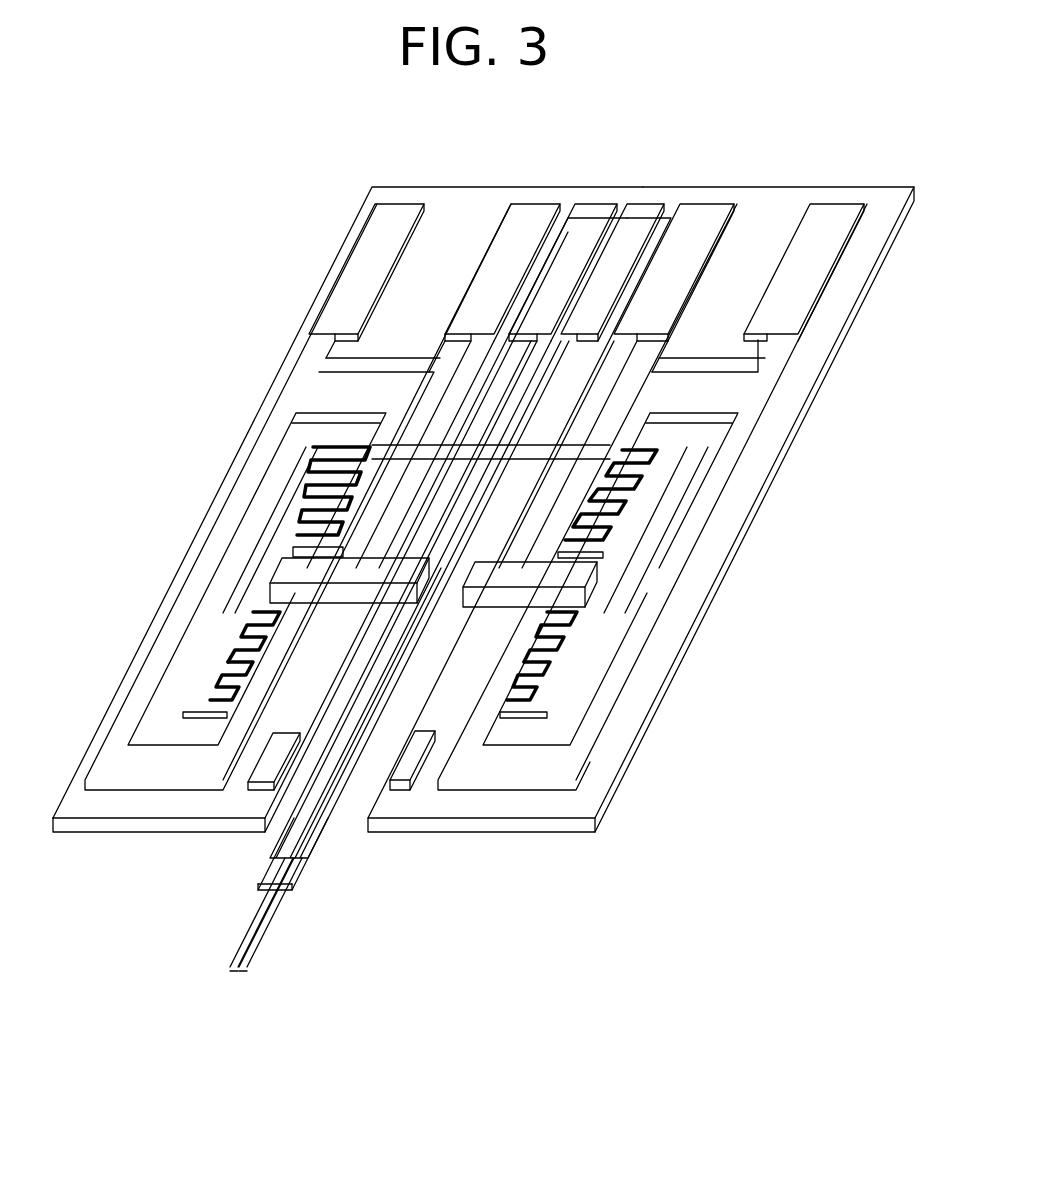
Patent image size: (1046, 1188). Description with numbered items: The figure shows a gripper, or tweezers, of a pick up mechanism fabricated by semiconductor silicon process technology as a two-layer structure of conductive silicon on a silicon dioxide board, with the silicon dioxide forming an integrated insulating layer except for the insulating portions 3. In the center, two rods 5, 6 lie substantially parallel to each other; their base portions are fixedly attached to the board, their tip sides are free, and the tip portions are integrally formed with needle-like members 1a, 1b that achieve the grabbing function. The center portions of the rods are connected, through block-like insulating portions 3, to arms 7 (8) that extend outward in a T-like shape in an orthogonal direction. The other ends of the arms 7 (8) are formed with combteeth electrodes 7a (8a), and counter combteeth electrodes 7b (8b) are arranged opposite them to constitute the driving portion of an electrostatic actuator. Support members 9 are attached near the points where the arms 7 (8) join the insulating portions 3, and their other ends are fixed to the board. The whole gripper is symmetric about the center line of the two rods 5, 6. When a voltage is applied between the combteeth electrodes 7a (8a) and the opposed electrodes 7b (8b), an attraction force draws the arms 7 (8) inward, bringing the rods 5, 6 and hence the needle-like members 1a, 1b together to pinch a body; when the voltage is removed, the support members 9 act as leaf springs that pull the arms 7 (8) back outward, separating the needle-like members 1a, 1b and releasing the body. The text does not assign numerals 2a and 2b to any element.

The needle-like member 1a is at (236, 960).
The needle-like member 1b is at (250, 960).
The substrate 2a is at (388, 536).
The substrate 2b is at (578, 536).
The insulating portion 3 is at (340, 600).
The rod 5 is at (343, 733).
The rod 6 is at (367, 737).
The arm 7 is at (290, 570).
The combteeth electrode 7a is at (240, 657).
The counter combteeth electrode 7b is at (250, 633).
The arm 8 is at (580, 570).
The combteeth electrode 8a is at (557, 652).
The counter combteeth electrode 8b is at (550, 660).
The support member 9 is at (347, 492).